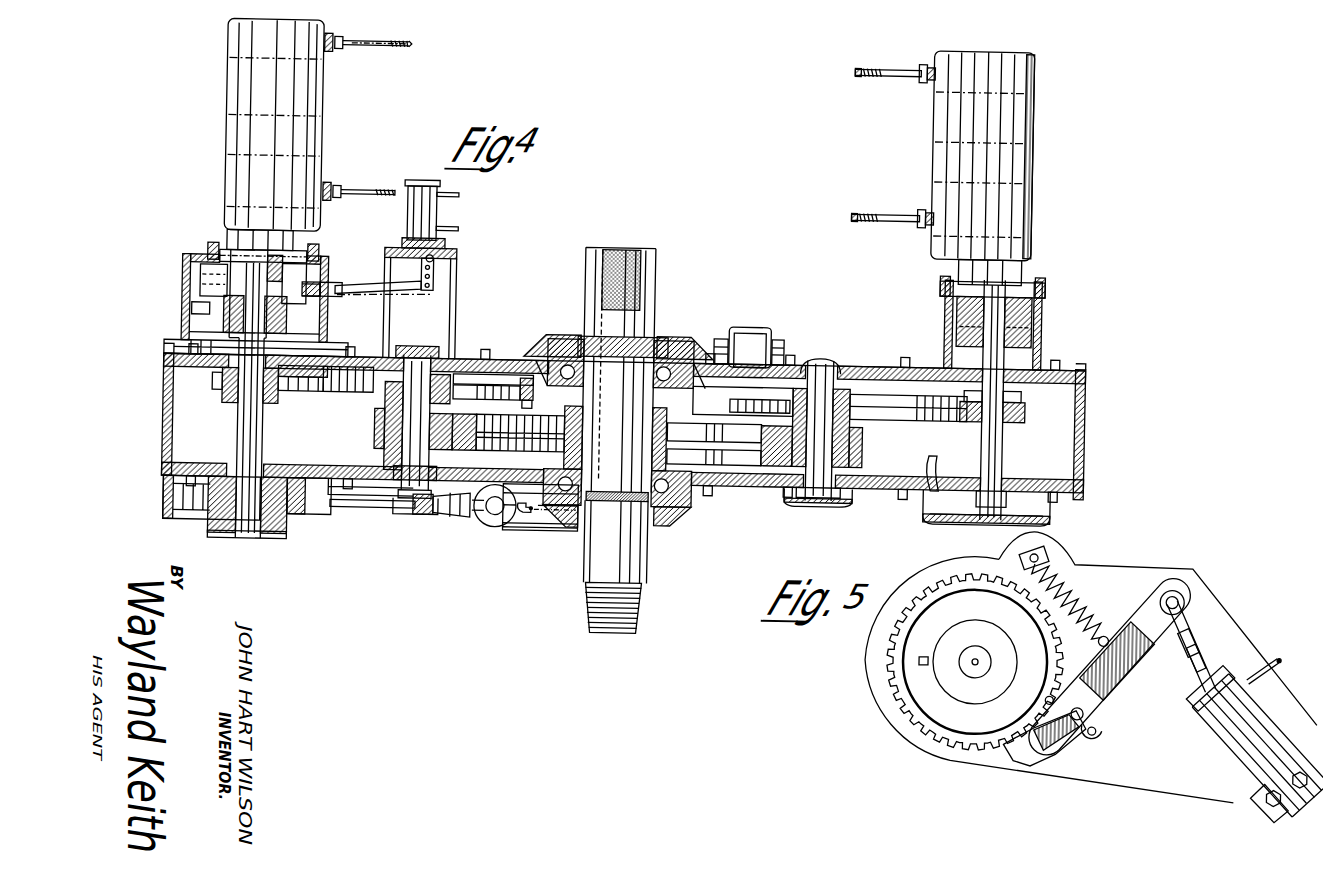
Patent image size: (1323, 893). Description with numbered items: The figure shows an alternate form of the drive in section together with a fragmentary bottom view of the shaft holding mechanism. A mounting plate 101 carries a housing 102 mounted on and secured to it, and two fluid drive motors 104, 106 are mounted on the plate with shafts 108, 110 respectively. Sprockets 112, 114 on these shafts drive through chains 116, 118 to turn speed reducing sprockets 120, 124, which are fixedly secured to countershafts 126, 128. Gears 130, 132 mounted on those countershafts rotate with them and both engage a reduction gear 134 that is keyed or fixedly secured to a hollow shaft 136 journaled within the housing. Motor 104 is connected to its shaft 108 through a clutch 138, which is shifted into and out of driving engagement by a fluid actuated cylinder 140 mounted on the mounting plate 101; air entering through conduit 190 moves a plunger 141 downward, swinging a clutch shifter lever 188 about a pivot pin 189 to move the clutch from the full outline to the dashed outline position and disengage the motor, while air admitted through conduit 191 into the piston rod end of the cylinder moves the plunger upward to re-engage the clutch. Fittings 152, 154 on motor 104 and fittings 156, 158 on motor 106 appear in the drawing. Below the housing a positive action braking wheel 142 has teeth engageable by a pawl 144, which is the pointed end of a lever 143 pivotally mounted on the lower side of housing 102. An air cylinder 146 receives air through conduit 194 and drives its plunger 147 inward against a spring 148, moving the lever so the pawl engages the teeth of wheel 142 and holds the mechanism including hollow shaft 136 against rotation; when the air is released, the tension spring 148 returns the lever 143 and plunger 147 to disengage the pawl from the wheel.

In FIG. 4, the mounting plate 101 is at (497, 349).
In FIG. 4, the housing 102 is at (1083, 409).
In FIG. 4, the fluid drive motor 104 is at (311, 131).
In FIG. 4, the fluid drive motor 106 is at (1024, 174).
In FIG. 4, the shaft 108 is at (270, 547).
In FIG. 4, the shaft 110 is at (1000, 453).
In FIG. 5, the shaft 110 is at (973, 670).
In FIG. 4, the sprocket 112 is at (272, 410).
In FIG. 4, the sprocket 114 is at (1020, 405).
In FIG. 4, the chain 116 is at (302, 404).
In FIG. 4, the chain 118 is at (955, 409).
In FIG. 4, the speed reducing sprocket 120 is at (517, 382).
In FIG. 4, the speed reducing sprocket 124 is at (895, 388).
In FIG. 4, the countershaft 126 is at (407, 427).
In FIG. 4, the countershaft 128 is at (841, 353).
In FIG. 4, the gear 130 is at (383, 440).
In FIG. 4, the gear 132 is at (853, 443).
In FIG. 4, the reduction gear 134 is at (772, 467).
In FIG. 4, the hollow shaft 136 is at (641, 570).
In FIG. 4, the clutch 138 is at (208, 300).
In FIG. 4, the fluid actuated cylinder 140 is at (434, 219).
In FIG. 4, the plunger 141 is at (429, 262).
In FIG. 4, the positive action braking wheel 142 is at (335, 520).
In FIG. 5, the positive action braking wheel 142 is at (917, 737).
In FIG. 4, the lever 143 is at (409, 515).
In FIG. 5, the lever 143 is at (1138, 613).
In FIG. 5, the pawl 144 is at (1032, 752).
In FIG. 4, the air cylinder 146 is at (530, 518).
In FIG. 5, the air cylinder 146 is at (1230, 713).
In FIG. 4, the plunger 147 is at (475, 512).
In FIG. 5, the plunger 147 is at (1207, 663).
In FIG. 5, the spring 148 is at (1076, 584).
In FIG. 4, the bolt 152 is at (393, 47).
In FIG. 4, the bolt 154 is at (395, 172).
In FIG. 4, the bolt 156 is at (866, 75).
In FIG. 4, the bolt 158 is at (874, 215).
In FIG. 4, the clutch shifter lever 188 is at (367, 287).
In FIG. 4, the pivot pin 189 is at (335, 303).
In FIG. 4, the air conduit 190 is at (442, 196).
In FIG. 4, the air conduit 191 is at (454, 231).
In FIG. 4, the conduit 194 is at (530, 520).
In FIG. 5, the conduit 194 is at (1273, 657).